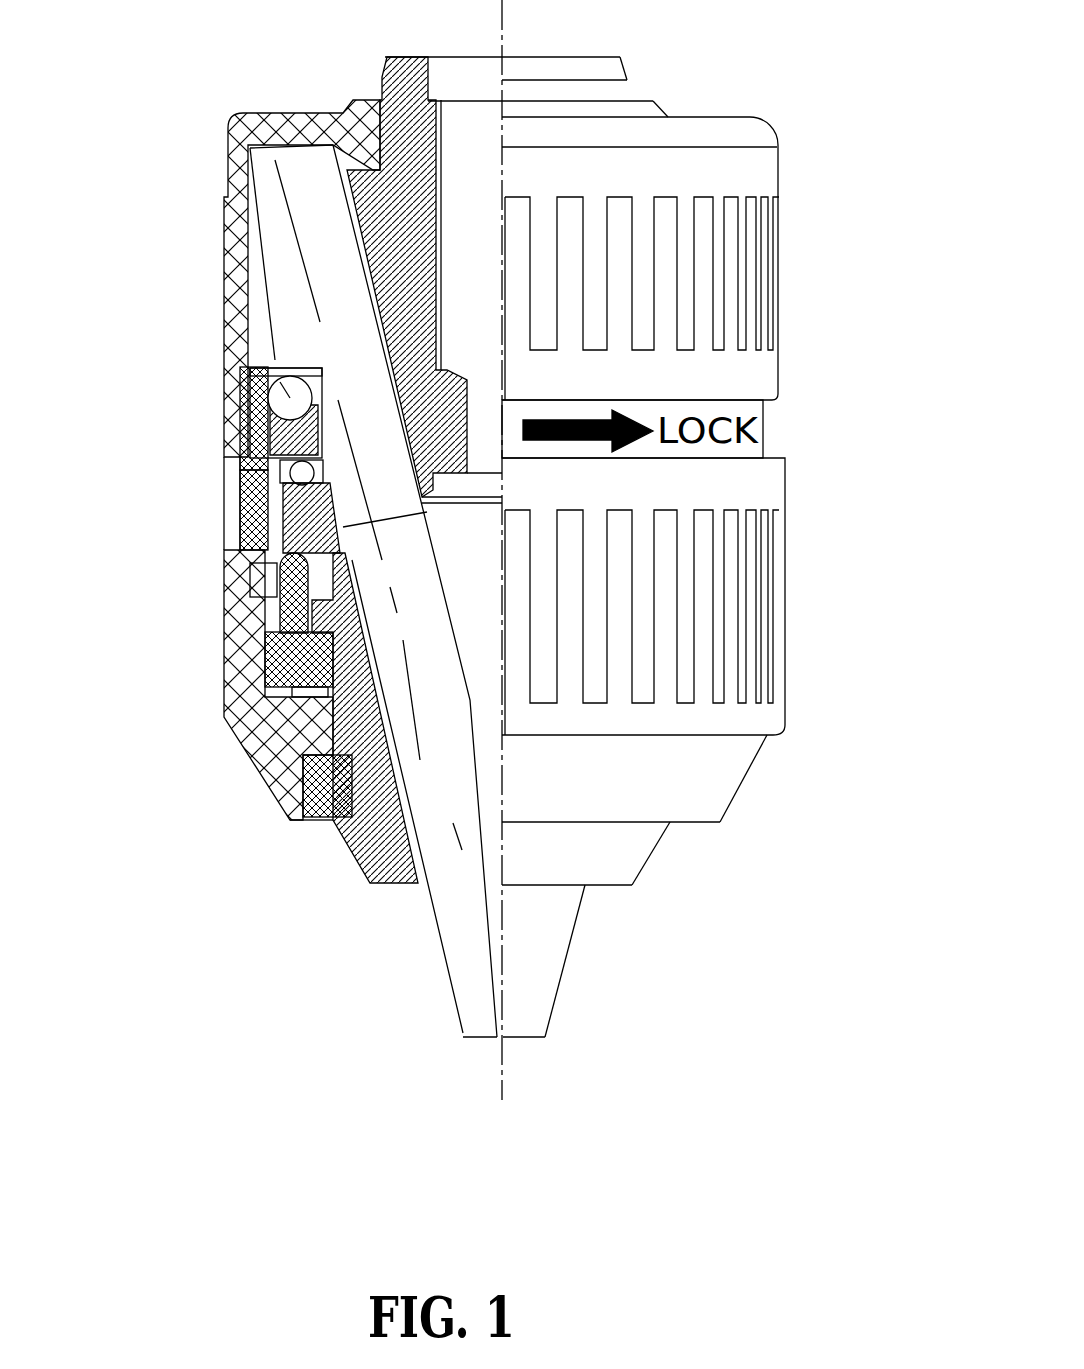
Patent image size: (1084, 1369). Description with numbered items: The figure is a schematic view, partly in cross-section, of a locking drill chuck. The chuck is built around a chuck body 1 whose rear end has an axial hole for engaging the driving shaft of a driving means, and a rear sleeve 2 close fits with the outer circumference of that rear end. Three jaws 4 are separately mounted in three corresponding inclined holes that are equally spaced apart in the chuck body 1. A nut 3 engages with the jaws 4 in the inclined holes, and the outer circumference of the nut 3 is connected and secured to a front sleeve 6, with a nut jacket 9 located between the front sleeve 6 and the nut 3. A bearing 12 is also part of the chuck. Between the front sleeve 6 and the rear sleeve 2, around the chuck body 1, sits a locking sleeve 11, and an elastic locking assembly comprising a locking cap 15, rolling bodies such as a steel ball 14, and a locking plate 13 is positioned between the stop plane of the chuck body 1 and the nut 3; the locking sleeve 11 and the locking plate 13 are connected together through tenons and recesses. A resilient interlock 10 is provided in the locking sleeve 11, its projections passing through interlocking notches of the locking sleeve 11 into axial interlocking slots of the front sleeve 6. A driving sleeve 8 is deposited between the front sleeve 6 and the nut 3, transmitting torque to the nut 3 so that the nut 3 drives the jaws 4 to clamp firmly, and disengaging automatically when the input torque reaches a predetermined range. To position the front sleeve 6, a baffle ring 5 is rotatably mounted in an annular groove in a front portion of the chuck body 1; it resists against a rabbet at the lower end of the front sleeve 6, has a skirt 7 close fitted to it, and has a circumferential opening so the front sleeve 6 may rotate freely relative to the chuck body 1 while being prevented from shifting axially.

The chuck body 1 is at (612, 470).
The rear sleeve 2 is at (650, 231).
The nut 3 is at (599, 556).
The jaws 4 is at (580, 591).
The baffle ring 5 is at (216, 960).
The front sleeve 6 is at (236, 566).
The skirt 7 is at (226, 816).
The driving sleeve 8 is at (216, 707).
The nut jacket 9 is at (198, 609).
The resilient interlock 10 is at (182, 560).
The locking sleeve 11 is at (178, 491).
The bearing 12 is at (205, 419).
The locking plate 13 is at (178, 360).
The steel ball 14 is at (205, 300).
The locking cap 15 is at (200, 221).